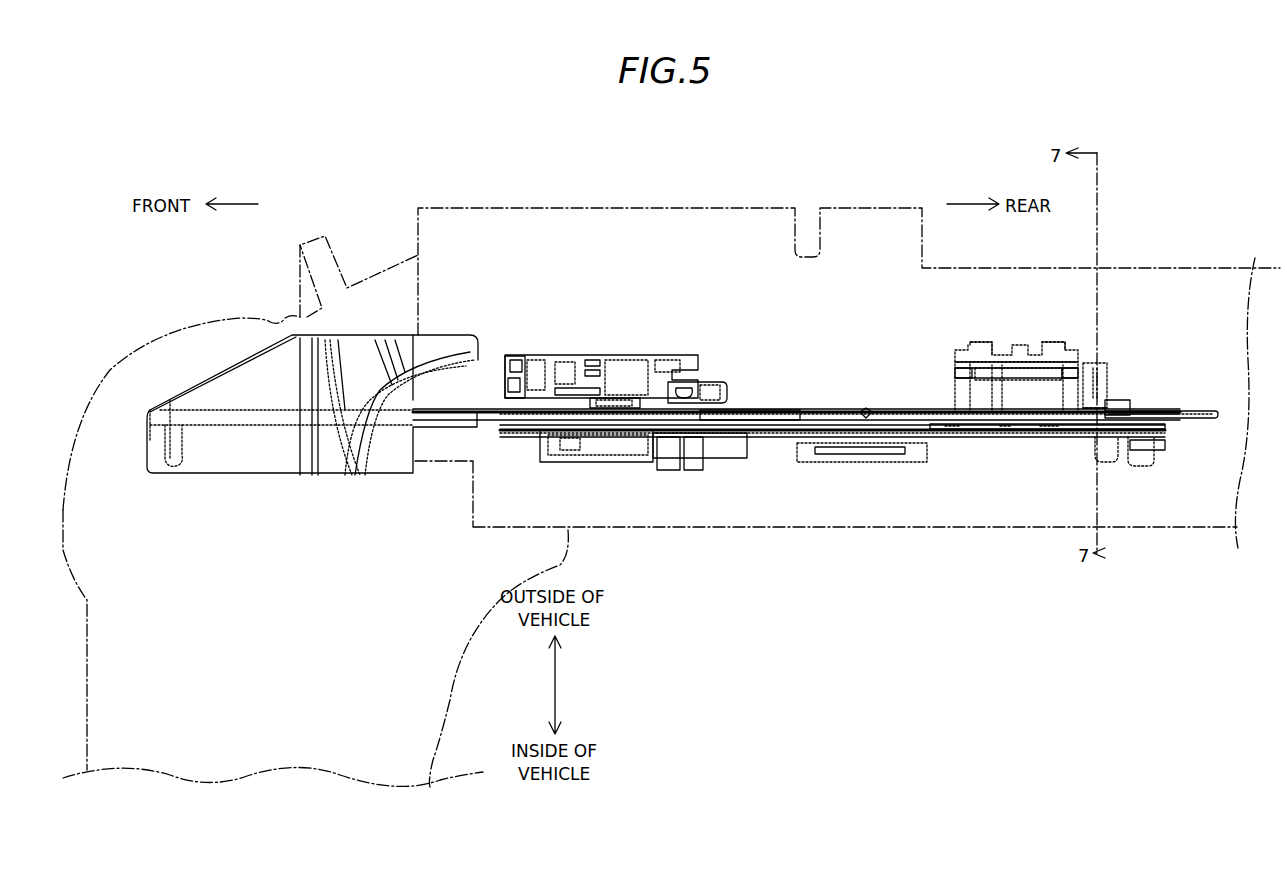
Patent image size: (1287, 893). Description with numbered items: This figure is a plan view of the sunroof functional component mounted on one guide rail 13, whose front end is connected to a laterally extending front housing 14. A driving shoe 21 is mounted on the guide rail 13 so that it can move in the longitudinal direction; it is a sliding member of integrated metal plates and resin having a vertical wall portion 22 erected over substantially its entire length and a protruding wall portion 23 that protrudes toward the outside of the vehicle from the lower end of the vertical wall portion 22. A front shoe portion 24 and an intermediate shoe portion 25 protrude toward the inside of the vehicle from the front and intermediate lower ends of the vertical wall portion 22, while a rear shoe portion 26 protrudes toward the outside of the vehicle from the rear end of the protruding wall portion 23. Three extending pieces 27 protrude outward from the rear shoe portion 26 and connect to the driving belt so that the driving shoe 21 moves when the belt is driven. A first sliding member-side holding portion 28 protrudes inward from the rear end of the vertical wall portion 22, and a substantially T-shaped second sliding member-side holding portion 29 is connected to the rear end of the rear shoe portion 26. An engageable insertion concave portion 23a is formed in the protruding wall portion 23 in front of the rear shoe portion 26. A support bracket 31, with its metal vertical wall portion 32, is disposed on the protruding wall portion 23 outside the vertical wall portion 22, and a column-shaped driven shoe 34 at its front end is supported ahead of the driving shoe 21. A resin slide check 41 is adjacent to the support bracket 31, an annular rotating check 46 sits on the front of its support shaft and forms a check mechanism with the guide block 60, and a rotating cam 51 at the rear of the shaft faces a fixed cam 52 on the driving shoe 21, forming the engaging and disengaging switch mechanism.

The guide rail 13 is at (1152, 268).
The front housing 14 is at (120, 362).
The driving shoe 21 is at (981, 448).
The vertical wall portion 22 is at (960, 438).
The protruding wall portion 23 is at (826, 410).
The engageable insertion concave portion 23a is at (868, 408).
The front shoe portion 24 is at (576, 462).
The intermediate shoe portion 25 is at (882, 462).
The rear shoe portion 26 is at (956, 368).
The extending pieces 27 is at (1008, 337).
The first sliding member-side holding portion 28 is at (1107, 462).
The second sliding member-side holding portion 29 is at (1106, 380).
The support bracket 31 is at (1182, 400).
The vertical wall portion 32 is at (772, 410).
The driven shoe 34 is at (176, 466).
The slide check 41 is at (517, 343).
The rotating check 46 is at (604, 400).
The rotating cam 51 is at (705, 382).
The fixed cam 52 is at (1042, 386).
The guide block 60 is at (550, 344).